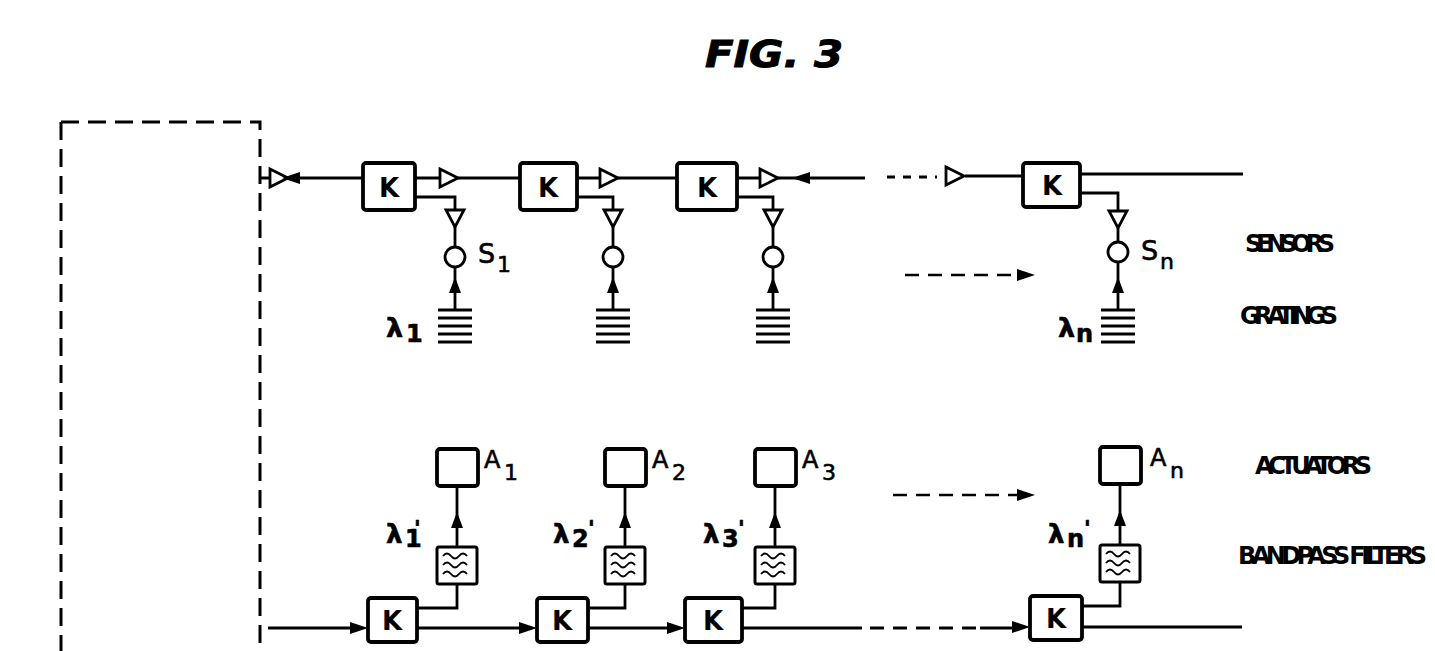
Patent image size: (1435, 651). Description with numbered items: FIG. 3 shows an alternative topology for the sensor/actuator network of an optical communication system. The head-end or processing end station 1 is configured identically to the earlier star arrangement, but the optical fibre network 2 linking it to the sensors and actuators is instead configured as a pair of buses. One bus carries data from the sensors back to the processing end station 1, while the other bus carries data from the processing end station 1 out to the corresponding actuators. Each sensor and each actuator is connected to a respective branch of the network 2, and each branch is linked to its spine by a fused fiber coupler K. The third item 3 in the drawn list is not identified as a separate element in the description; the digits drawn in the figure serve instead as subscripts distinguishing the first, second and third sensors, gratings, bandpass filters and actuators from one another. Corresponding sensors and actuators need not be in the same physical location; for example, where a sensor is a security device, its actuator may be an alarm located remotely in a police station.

The processing end station 1 is at (226, 136).
The optical fibre network 2 is at (608, 272).
The sensor S3 with grating at wavelength lambda 3 is at (773, 272).